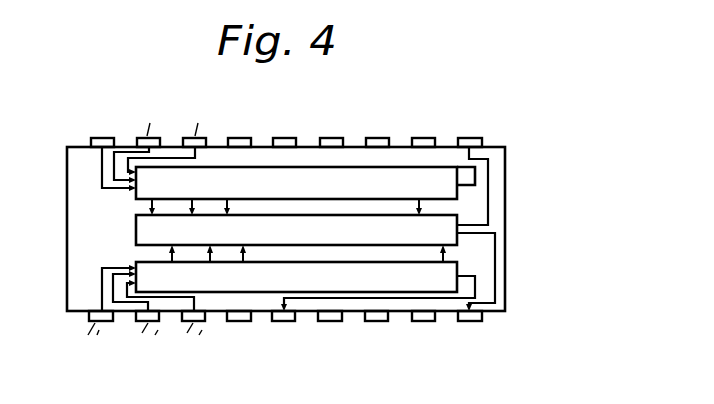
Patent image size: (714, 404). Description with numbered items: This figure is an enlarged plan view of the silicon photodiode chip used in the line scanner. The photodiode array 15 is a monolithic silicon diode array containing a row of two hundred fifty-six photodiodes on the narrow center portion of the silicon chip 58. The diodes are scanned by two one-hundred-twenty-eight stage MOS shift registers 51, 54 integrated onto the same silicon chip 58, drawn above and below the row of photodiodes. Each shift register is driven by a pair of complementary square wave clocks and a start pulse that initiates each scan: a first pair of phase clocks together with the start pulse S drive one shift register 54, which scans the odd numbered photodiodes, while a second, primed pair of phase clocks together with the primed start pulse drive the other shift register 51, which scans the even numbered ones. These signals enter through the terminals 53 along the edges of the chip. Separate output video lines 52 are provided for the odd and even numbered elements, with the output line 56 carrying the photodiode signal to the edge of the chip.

The photodiode array 15 is at (401, 93).
The shift register 51 is at (415, 283).
The output video lines 52 is at (474, 226).
The terminal pins 53 is at (91, 136).
The shift register 54 is at (440, 168).
The output line 56 is at (461, 217).
The silicon chip 58 is at (70, 238).